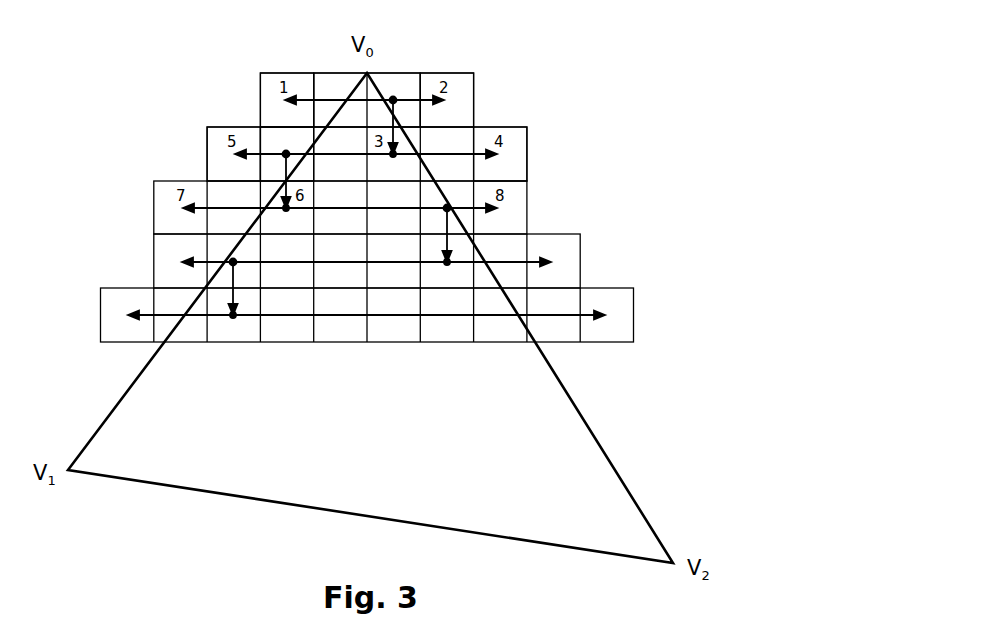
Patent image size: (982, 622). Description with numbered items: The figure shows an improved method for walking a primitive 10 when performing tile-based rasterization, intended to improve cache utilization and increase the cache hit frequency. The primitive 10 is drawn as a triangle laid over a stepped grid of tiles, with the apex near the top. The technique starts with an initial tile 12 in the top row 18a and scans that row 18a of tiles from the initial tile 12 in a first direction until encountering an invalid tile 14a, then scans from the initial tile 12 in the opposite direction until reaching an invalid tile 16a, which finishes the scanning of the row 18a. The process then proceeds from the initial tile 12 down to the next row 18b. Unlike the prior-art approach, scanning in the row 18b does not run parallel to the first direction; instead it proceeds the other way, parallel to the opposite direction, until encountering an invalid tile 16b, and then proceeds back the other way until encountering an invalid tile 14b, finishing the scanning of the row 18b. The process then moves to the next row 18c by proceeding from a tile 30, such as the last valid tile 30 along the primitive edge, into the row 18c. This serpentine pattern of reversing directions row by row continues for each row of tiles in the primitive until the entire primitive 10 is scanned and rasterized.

The primitive 10 is at (594, 433).
The initial tile 12 is at (410, 80).
The invalid tile 14a is at (266, 80).
The invalid tile 14b is at (212, 132).
The invalid tile 16a is at (463, 80).
The invalid tile 16b is at (515, 133).
The row of tiles 18a is at (580, 103).
The row of tiles 18b is at (580, 150).
The row of tiles 18c is at (580, 202).
The last valid tile 30 is at (262, 133).